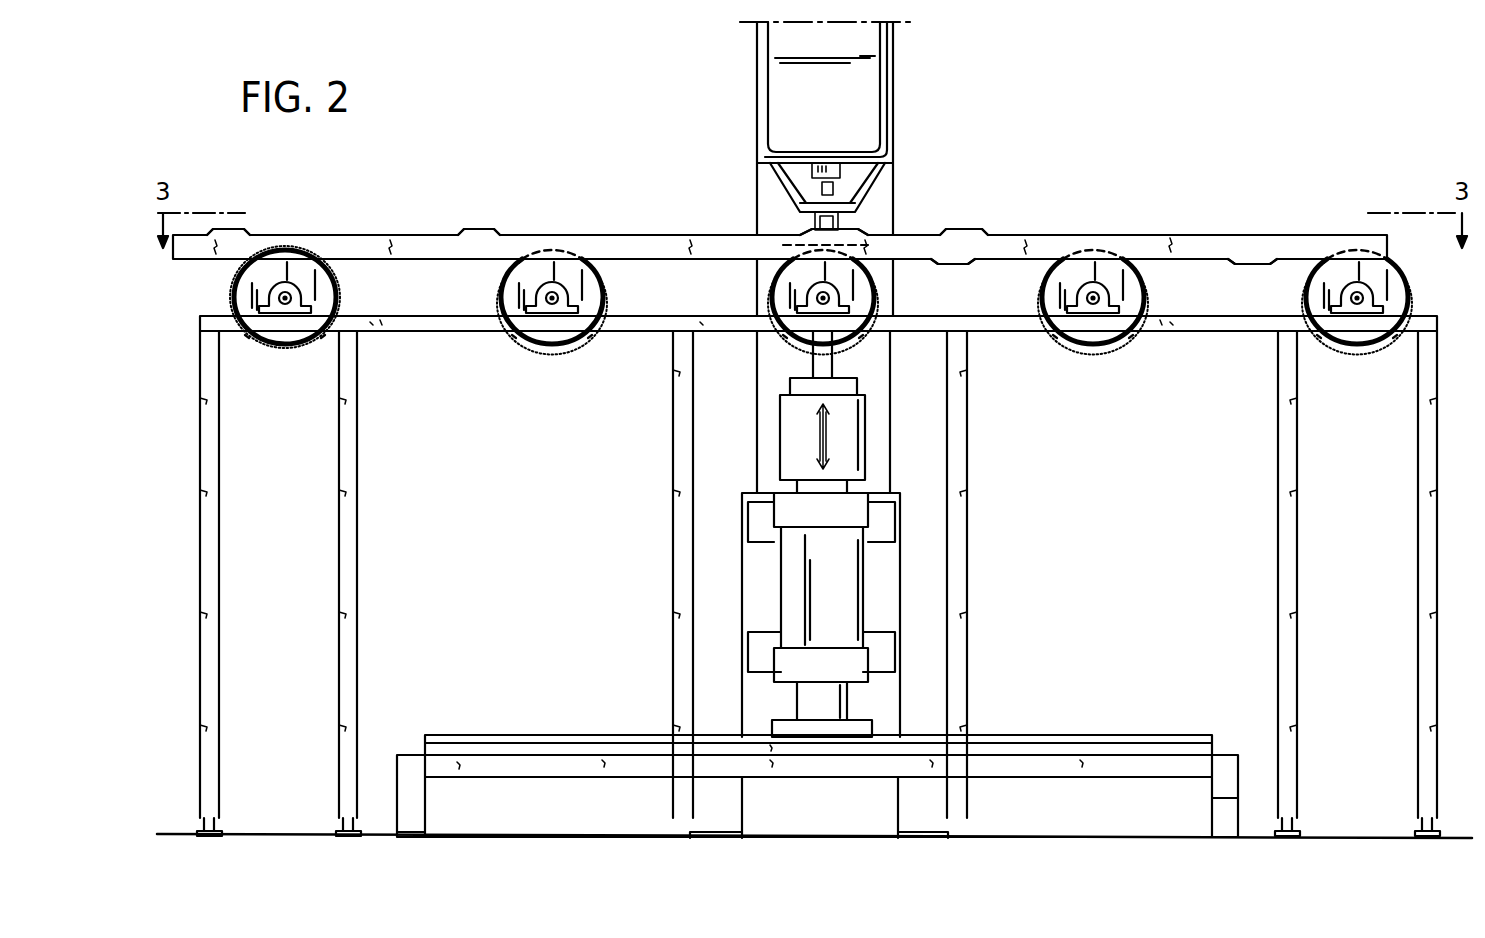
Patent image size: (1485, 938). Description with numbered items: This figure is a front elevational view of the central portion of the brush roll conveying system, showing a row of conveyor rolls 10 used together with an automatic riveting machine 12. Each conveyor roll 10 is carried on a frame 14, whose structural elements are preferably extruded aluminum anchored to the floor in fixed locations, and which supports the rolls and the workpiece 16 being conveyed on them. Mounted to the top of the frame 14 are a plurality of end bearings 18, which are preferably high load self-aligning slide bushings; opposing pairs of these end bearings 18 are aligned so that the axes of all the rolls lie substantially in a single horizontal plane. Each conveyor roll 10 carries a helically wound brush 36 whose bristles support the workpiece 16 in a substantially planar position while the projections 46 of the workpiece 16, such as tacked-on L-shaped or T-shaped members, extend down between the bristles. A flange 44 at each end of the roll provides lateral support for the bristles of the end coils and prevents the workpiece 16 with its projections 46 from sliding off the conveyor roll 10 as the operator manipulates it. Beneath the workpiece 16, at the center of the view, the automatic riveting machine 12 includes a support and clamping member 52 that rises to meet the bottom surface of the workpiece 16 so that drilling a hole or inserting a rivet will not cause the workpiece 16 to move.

The conveyor roll 10 is at (766, 283).
The automatic riveting machine 12 is at (895, 105).
The frame 14 is at (1284, 410).
The workpiece 16 is at (673, 237).
The end bearing 18 is at (1312, 290).
The brush 36 is at (1363, 343).
The flange 44 is at (1383, 272).
The projection 46 is at (1230, 262).
The support and clamping member 52 is at (810, 350).